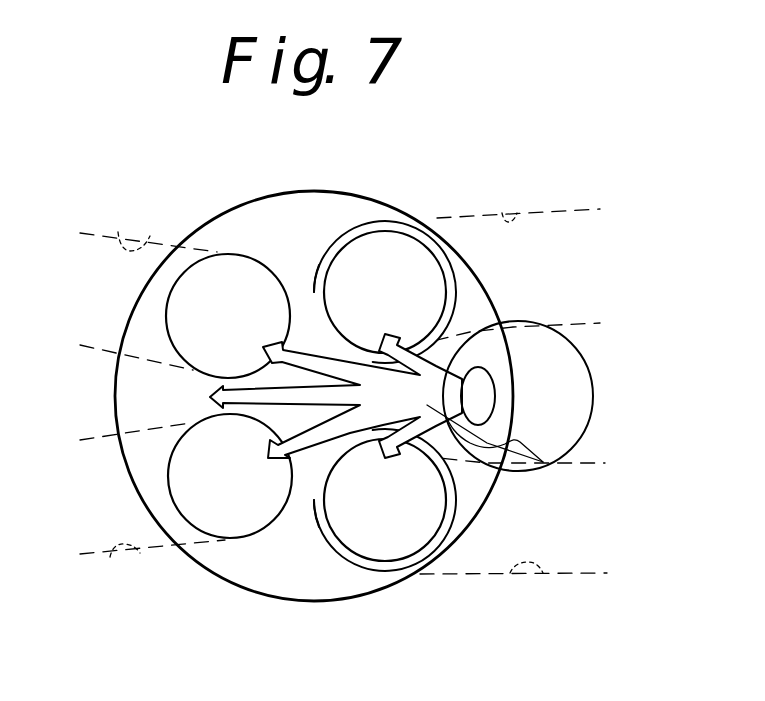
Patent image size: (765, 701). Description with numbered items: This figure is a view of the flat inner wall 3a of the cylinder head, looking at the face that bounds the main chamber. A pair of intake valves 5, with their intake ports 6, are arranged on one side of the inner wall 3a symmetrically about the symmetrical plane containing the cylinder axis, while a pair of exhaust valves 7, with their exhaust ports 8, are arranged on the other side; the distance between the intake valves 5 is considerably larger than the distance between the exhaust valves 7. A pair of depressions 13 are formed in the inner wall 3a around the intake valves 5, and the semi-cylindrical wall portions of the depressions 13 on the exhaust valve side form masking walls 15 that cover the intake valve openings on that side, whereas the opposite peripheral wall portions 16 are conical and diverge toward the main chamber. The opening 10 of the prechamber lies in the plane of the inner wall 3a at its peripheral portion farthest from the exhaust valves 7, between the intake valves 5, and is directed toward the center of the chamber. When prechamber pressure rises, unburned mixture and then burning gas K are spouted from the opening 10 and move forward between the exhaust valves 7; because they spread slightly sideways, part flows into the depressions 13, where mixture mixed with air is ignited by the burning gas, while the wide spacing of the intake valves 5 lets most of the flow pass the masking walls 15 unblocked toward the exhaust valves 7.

The inner wall of the cylinder head 3a is at (276, 230).
The intake valves 5 is at (370, 253).
The intake ports 6 is at (517, 211).
The exhaust valves 7 is at (225, 273).
The exhaust ports 8 is at (118, 232).
The opening of the prechamber 10 is at (480, 390).
The depressions 13 is at (333, 258).
The masking walls 15 is at (318, 268).
The peripheral wall portions 16 is at (449, 262).
The burning gas K is at (543, 462).